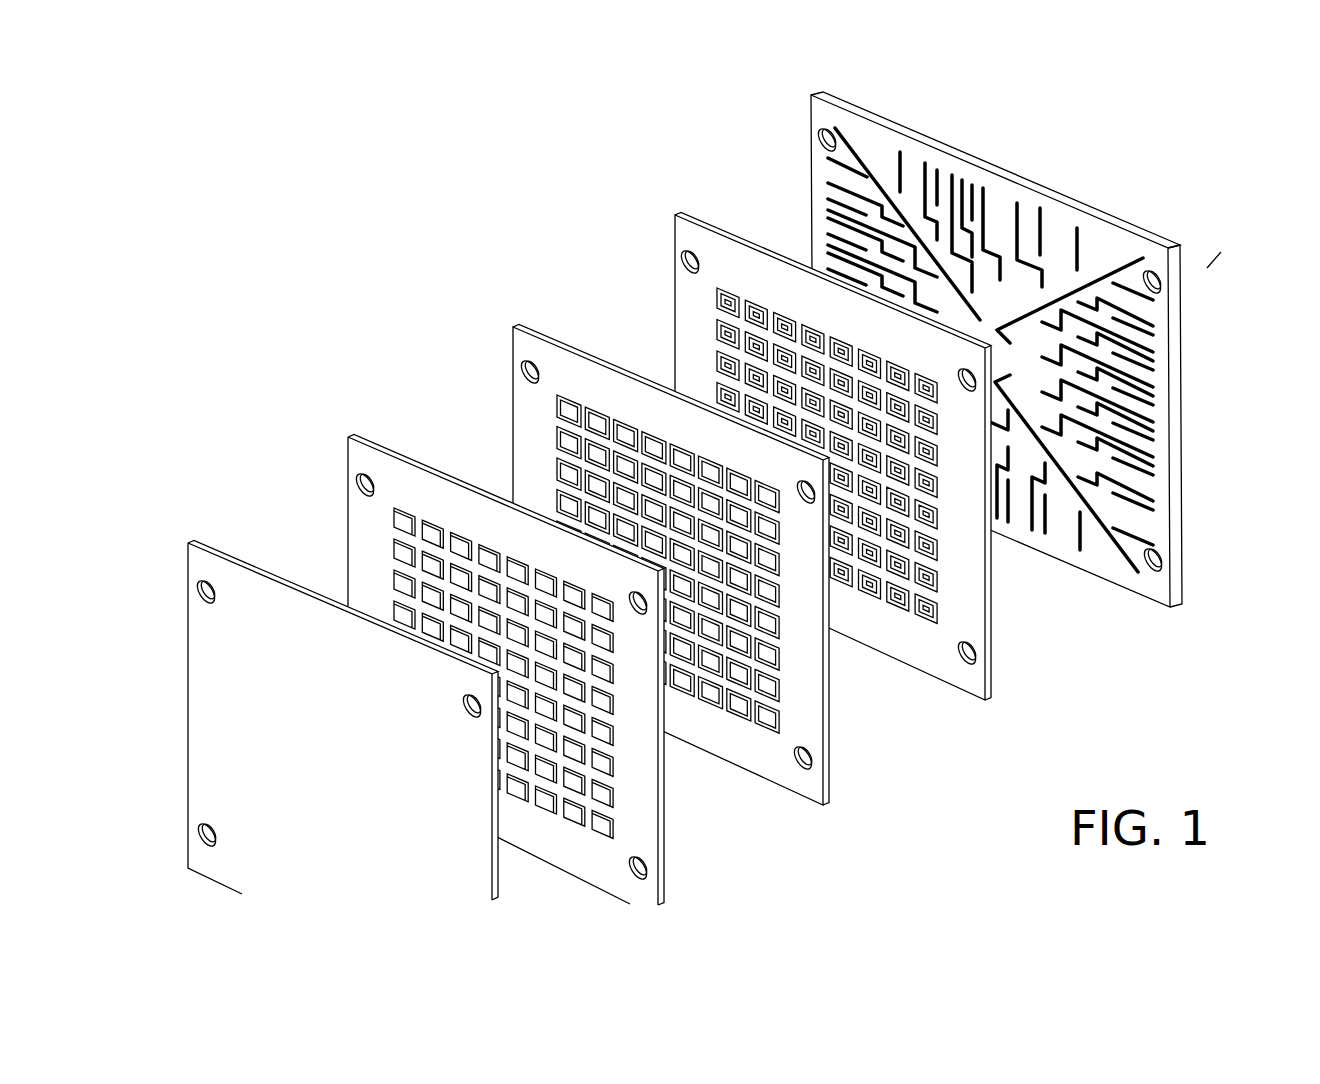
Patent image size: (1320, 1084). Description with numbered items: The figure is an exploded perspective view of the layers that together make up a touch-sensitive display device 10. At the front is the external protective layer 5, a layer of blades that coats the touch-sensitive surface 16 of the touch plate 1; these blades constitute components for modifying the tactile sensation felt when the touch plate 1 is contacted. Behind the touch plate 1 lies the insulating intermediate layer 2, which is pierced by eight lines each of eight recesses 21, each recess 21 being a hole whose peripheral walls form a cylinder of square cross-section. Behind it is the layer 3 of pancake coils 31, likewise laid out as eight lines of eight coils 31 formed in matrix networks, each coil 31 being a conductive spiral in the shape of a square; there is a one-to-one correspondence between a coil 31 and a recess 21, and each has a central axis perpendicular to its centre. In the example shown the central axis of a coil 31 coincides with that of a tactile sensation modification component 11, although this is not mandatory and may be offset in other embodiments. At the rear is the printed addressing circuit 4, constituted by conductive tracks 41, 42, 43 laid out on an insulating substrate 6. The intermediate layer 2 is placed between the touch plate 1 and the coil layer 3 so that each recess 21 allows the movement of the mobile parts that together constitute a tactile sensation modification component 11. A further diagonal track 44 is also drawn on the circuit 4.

The display device 10 is at (458, 313).
The touch plate 1 is at (331, 494).
The external protective layer 5 is at (174, 625).
The insulating intermediate layer 2 is at (850, 767).
The layer of pancake coils 3 is at (1018, 659).
The printed addressing circuit 4 is at (1200, 590).
The insulating substrate 6 is at (1185, 524).
The tactile sensation modification component 11 is at (405, 520).
The recess 21 is at (600, 408).
The pancake coil 31 is at (755, 305).
The conductive track 41 is at (1160, 297).
The conductive track 42 is at (1150, 390).
The conductive track 43 is at (1150, 455).
The diagonal feed line 44 is at (1143, 258).
The touch-sensitive surface 16 is at (641, 836).